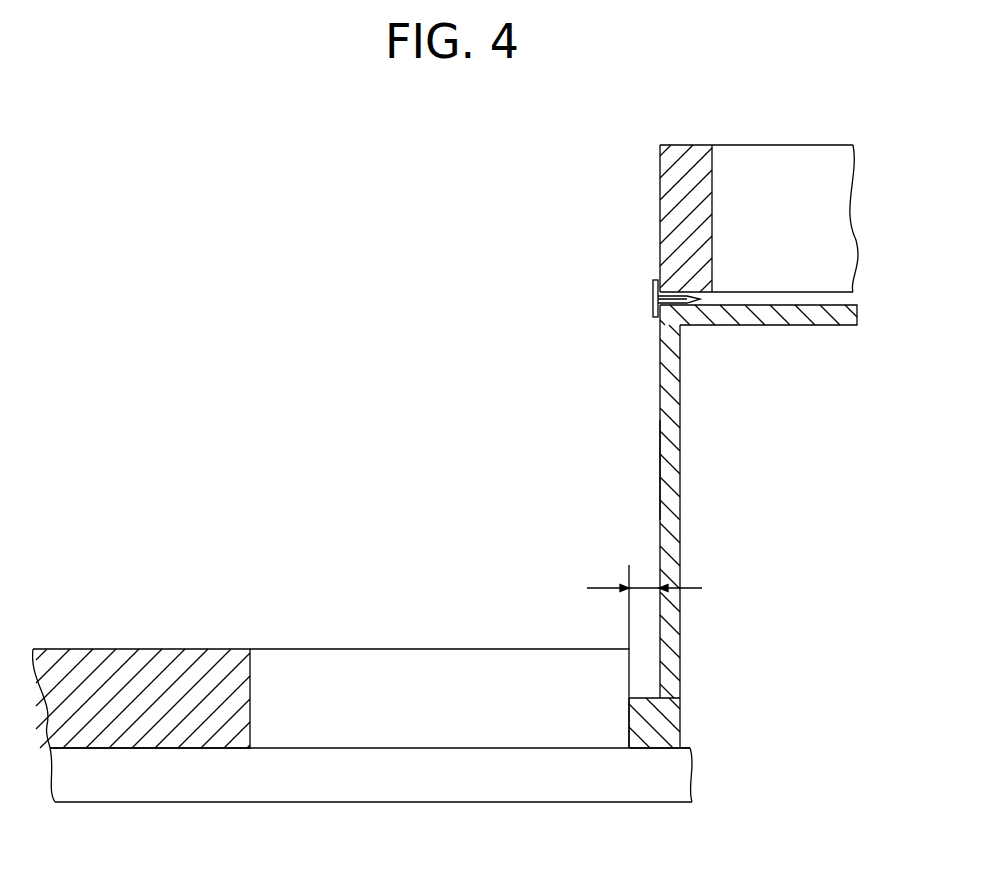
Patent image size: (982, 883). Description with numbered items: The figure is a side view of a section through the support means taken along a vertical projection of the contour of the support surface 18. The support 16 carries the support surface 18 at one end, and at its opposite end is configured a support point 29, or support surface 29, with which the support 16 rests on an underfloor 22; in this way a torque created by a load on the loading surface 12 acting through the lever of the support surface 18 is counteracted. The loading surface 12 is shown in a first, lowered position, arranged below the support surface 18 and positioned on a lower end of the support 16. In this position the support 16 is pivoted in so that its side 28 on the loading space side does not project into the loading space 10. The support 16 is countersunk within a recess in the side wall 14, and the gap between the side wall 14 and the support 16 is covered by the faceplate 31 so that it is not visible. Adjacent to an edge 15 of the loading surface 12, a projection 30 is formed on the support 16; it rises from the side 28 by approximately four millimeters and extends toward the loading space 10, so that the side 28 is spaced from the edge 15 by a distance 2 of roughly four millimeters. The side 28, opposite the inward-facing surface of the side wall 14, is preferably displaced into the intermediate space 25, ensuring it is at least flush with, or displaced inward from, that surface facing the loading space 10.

The distance 2 is at (643, 587).
The loading space 10 is at (345, 433).
The loading surface 12 is at (292, 665).
The side wall 14 is at (673, 183).
The edge 15 is at (572, 668).
The support 16 is at (672, 378).
The support surface 18 is at (818, 318).
The underfloor 22 is at (609, 778).
The intermediate space 25 is at (738, 511).
The side 28 is at (670, 468).
The support point 29 is at (657, 752).
The projection 30 is at (657, 728).
The faceplate 31 is at (655, 297).